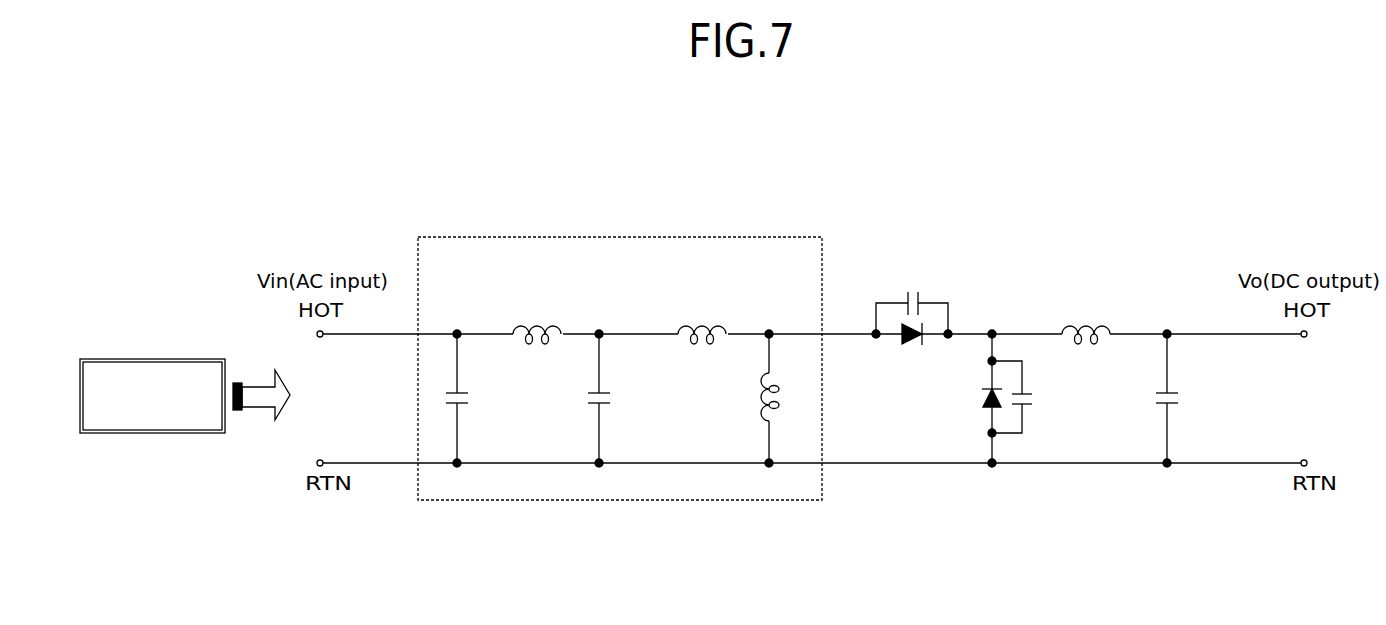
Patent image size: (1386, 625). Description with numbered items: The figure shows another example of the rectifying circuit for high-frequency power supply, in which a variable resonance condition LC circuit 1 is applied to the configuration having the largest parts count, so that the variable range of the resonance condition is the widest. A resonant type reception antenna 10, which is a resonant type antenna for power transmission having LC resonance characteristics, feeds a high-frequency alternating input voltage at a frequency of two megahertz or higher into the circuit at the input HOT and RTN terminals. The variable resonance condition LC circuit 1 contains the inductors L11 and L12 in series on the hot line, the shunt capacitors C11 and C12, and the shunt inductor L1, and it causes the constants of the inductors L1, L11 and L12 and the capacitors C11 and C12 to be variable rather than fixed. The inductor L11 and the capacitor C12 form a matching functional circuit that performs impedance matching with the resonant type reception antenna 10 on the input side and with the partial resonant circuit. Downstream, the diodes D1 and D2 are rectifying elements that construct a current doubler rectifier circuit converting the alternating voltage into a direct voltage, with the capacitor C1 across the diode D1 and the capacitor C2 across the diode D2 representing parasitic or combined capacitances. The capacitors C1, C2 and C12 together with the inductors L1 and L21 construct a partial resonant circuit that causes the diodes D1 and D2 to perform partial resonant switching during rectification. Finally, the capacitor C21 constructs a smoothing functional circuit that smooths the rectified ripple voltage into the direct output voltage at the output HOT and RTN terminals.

The resonant type reception antenna 10 is at (160, 358).
The variable resonance condition LC circuit 1 is at (762, 237).
The inductor L11 is at (537, 321).
The inductor L12 is at (702, 321).
The inductor L1 is at (786, 398).
The capacitor C11 is at (479, 398).
The capacitor C12 is at (621, 398).
The capacitor C1 is at (912, 300).
The diode D1 is at (912, 349).
The diode D2 is at (974, 398).
The capacitor C2 is at (1030, 397).
The inductor L21 is at (1086, 321).
The capacitor C21 is at (1188, 398).